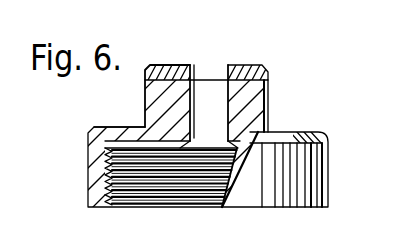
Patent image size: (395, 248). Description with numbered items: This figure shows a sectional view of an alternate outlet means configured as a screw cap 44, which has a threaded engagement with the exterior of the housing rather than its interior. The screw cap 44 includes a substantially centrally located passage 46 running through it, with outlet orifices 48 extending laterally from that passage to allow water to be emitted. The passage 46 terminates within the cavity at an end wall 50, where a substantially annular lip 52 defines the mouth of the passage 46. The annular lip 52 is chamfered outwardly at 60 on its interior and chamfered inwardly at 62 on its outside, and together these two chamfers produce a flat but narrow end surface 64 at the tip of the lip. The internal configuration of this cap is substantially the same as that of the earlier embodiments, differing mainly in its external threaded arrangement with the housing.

The screw cap 44 is at (337, 100).
The passage 46 is at (203, 66).
The outlet orifices 48 is at (145, 93).
The end wall 50 is at (123, 143).
The annular lip 52 is at (218, 145).
The outward chamfer 60 is at (198, 141).
The inward chamfer 62 is at (168, 145).
The flat end surface 64 is at (271, 148).